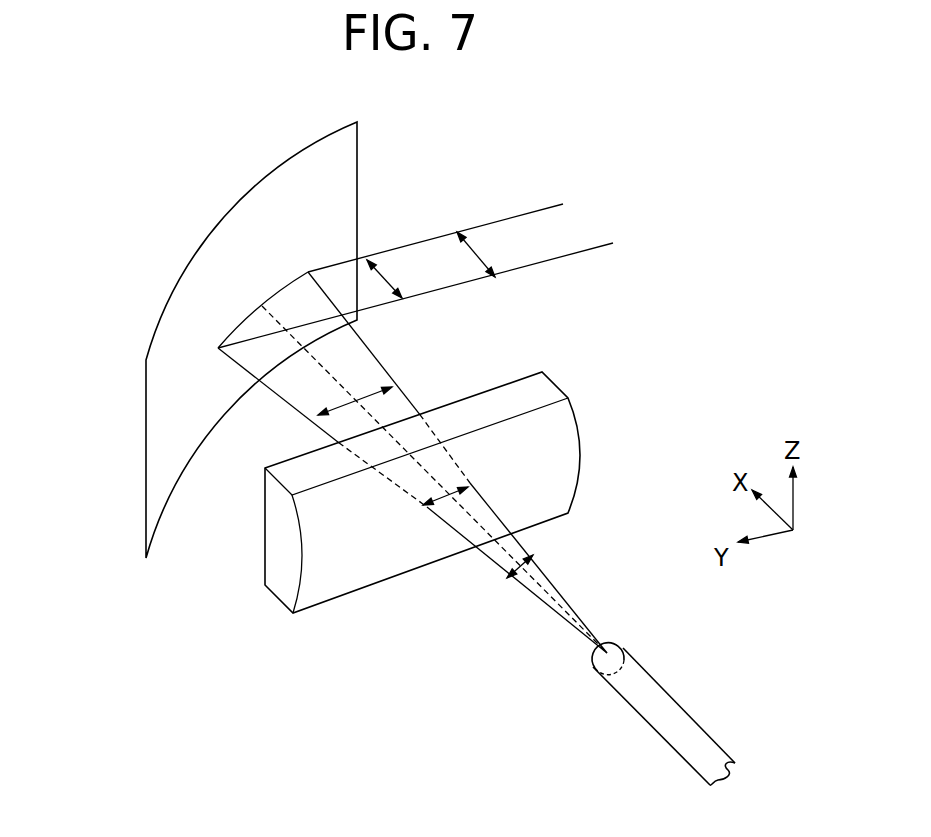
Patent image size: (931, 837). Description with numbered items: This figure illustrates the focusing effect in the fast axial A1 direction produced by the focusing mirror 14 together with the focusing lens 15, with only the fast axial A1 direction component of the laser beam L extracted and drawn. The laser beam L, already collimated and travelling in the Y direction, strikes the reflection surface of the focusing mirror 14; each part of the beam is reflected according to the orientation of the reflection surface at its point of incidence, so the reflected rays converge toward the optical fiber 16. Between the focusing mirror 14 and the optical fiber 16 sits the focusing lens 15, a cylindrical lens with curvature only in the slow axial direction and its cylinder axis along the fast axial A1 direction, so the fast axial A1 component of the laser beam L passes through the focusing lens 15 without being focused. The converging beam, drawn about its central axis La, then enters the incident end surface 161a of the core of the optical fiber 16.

The focusing mirror 14 is at (163, 310).
The focusing lens 15 is at (580, 466).
The optical fiber 16 is at (650, 708).
The incident end surface 161a is at (603, 655).
The laser beam L is at (455, 285).
The optical axis La is at (477, 522).
The fast axial direction A1 is at (480, 258).